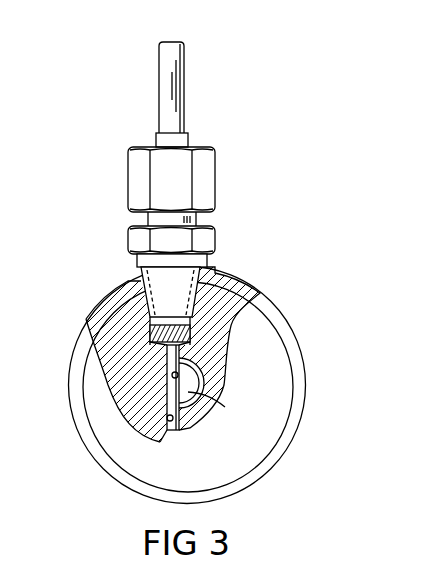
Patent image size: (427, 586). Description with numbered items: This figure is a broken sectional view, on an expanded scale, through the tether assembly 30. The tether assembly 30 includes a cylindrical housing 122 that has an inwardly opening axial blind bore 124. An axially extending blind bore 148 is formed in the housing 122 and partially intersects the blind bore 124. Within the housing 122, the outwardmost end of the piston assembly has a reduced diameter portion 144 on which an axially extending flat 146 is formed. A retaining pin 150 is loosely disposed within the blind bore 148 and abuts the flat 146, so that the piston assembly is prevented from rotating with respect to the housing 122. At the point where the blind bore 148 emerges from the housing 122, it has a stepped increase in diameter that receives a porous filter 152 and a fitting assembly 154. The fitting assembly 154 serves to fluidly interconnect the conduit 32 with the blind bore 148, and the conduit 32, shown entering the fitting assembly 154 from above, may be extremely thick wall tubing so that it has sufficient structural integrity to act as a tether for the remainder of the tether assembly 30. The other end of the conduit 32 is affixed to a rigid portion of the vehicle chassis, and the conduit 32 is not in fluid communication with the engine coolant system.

The tether assembly 30 is at (247, 260).
The conduit 32 is at (165, 87).
The cylindrical housing 122 is at (118, 295).
The axial blind bore 124 is at (225, 407).
The reduced diameter portion 144 is at (200, 390).
The axially extending flat 146 is at (178, 375).
The axially extending blind bore 148 is at (167, 418).
The retaining pin 150 is at (173, 392).
The porous filter 152 is at (148, 332).
The fitting assembly 154 is at (143, 200).